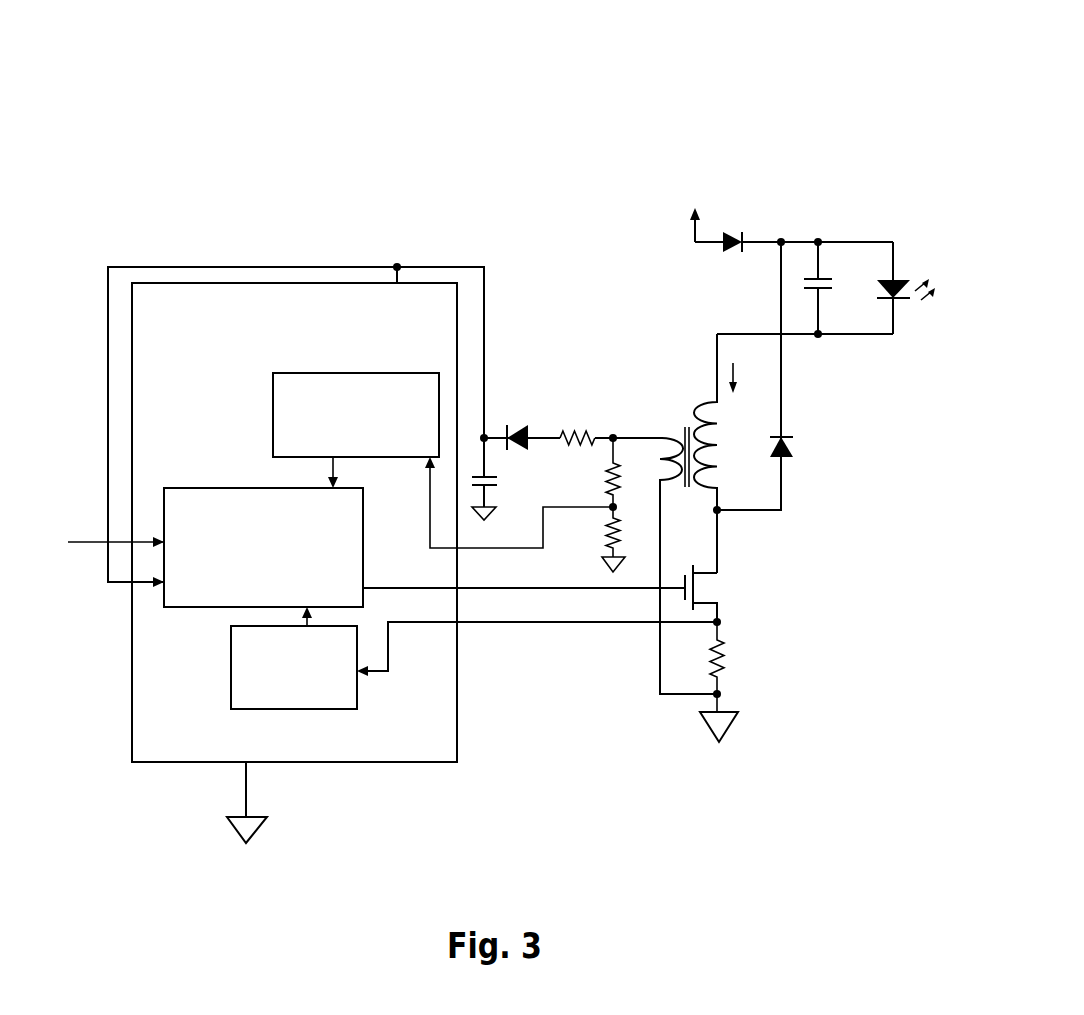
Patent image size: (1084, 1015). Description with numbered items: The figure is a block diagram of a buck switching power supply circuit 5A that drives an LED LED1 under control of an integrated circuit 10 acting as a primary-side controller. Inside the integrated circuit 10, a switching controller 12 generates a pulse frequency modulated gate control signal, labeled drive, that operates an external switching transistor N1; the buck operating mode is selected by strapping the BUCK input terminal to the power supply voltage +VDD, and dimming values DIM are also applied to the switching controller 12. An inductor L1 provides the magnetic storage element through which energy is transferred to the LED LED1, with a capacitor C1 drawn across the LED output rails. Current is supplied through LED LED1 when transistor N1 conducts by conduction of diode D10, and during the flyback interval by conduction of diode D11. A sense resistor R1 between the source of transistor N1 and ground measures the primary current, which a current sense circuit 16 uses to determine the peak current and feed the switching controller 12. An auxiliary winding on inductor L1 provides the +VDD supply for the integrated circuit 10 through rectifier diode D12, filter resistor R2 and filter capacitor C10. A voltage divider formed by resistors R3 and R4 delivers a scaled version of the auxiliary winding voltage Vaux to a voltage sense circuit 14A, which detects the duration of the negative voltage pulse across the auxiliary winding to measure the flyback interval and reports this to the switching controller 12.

The buck switching power supply circuit 5A is at (738, 95).
The integrated circuit 10 is at (383, 542).
The switching controller 12 is at (424, 547).
The voltage sense circuit 14A is at (443, 460).
The current sense circuit 16 is at (475, 658).
The diode D10 is at (783, 236).
The diode D11 is at (781, 376).
The rectifier diode D12 is at (519, 423).
The capacitor C1 is at (832, 288).
The filter capacitor C10 is at (505, 479).
The sense resistor R1 is at (730, 680).
The filter resistor R2 is at (577, 424).
The resistor R3 is at (599, 474).
The resistor R4 is at (601, 539).
The inductor L1 is at (707, 514).
The switching transistor N1 is at (722, 593).
The LED LED1 is at (836, 288).